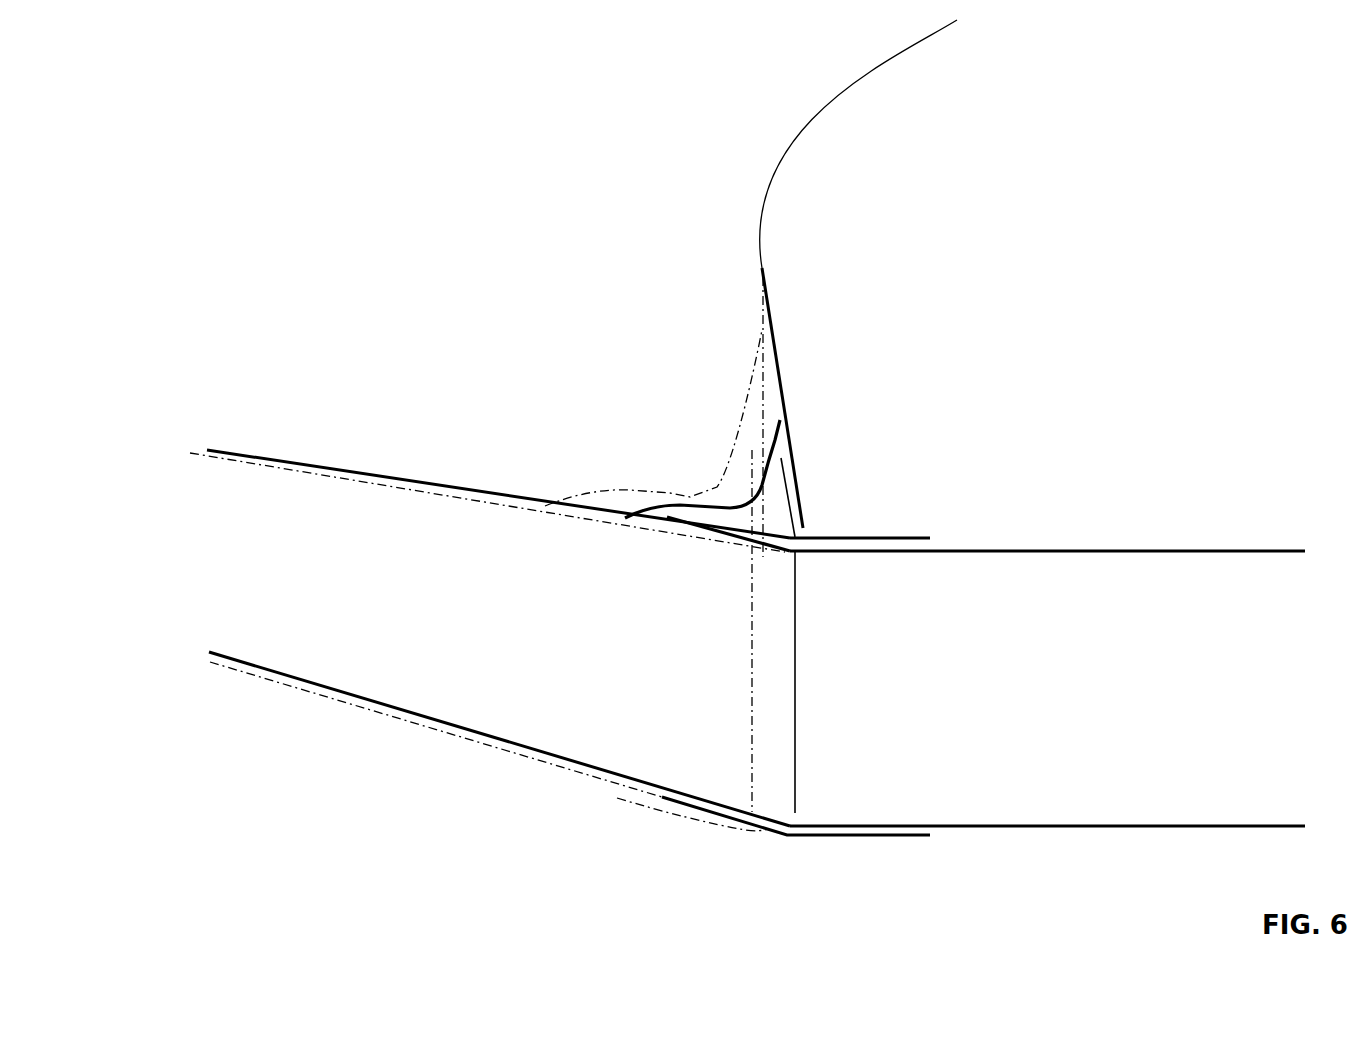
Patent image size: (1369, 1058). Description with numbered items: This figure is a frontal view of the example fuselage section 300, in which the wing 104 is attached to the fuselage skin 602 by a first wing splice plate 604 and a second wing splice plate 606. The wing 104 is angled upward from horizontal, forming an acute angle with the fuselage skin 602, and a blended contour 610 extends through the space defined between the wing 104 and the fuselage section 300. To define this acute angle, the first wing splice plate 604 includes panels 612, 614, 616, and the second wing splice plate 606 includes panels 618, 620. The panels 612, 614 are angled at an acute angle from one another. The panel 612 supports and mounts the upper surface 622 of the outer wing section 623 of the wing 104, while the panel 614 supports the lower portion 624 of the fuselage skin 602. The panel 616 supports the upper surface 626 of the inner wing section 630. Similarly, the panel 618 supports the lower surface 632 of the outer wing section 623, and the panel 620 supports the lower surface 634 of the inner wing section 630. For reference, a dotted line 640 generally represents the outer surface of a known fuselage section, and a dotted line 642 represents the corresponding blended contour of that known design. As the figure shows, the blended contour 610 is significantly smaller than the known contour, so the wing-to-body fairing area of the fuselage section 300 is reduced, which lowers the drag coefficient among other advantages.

The fuselage section 300 is at (1218, 57).
The wing 104 is at (263, 422).
The fuselage skin 602 is at (782, 152).
The first wing splice plate 604 is at (855, 546).
The second wing splice plate 606 is at (862, 843).
The blended contour 610 is at (731, 505).
The panel 612 is at (692, 530).
The panel 614 is at (791, 521).
The panel 616 is at (905, 538).
The panel 618 is at (702, 809).
The panel 620 is at (893, 835).
The upper surface 622 is at (497, 497).
The outer wing section 623 is at (434, 637).
The lower portion 624 is at (797, 462).
The upper surface 626 is at (1108, 551).
The inner wing section 630 is at (1122, 690).
The lower surface 632 is at (575, 762).
The lower surface 634 is at (1108, 826).
The dotted line 640 is at (763, 381).
The dotted line 642 is at (650, 490).